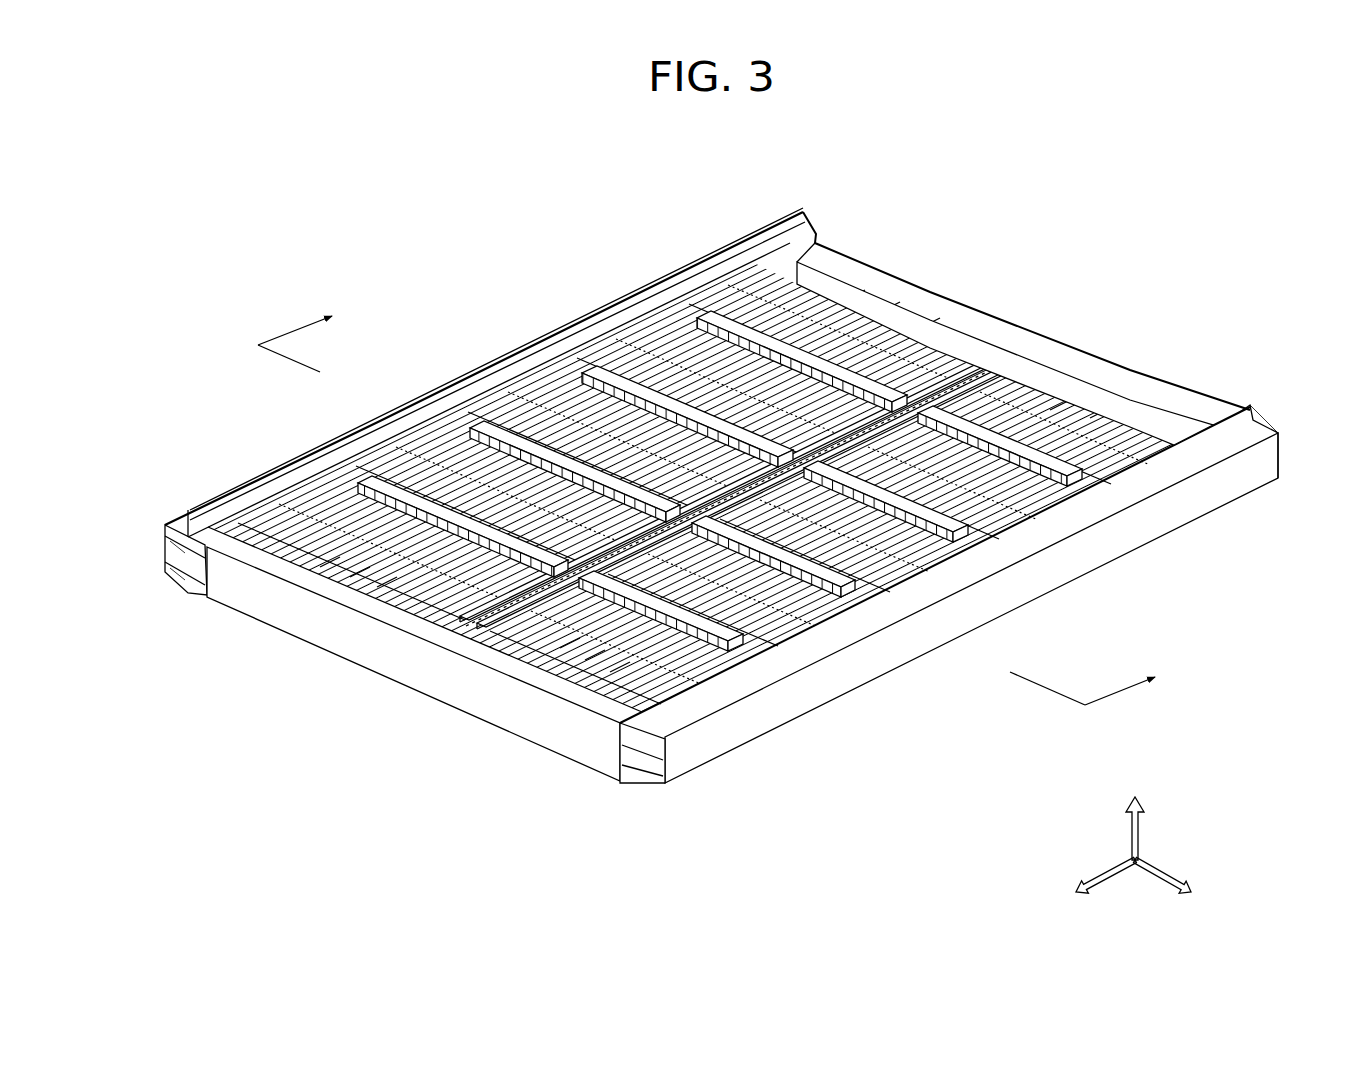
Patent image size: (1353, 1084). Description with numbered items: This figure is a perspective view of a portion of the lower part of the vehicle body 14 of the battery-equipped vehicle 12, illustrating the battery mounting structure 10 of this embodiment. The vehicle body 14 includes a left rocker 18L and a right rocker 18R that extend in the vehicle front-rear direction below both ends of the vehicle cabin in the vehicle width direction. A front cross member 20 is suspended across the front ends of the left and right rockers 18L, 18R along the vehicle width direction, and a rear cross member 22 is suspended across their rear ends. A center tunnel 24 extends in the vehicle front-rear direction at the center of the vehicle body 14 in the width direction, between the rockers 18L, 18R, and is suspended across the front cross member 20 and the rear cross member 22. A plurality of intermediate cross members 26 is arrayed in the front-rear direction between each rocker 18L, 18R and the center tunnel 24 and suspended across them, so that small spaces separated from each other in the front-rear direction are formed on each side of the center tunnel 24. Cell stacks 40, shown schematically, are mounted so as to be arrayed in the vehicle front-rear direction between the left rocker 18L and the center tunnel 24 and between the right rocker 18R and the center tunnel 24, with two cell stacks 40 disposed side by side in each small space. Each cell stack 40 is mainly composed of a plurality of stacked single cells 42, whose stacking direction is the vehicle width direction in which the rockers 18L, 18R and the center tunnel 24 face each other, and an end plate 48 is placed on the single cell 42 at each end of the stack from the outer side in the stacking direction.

The battery mounting structure 10 is at (500, 247).
The battery-equipped vehicle 12 is at (1264, 419).
The vehicle body 14 is at (1221, 386).
The right rocker 18R is at (192, 512).
The left rocker 18L is at (722, 750).
The front cross member 20 is at (380, 658).
The rear cross member 22 is at (1040, 340).
The center tunnel 24 is at (1000, 385).
The intermediate cross member 26 is at (372, 488).
The cell stack 40 is at (347, 525).
The single cell 42 is at (377, 587).
The end plate 48 is at (790, 300).